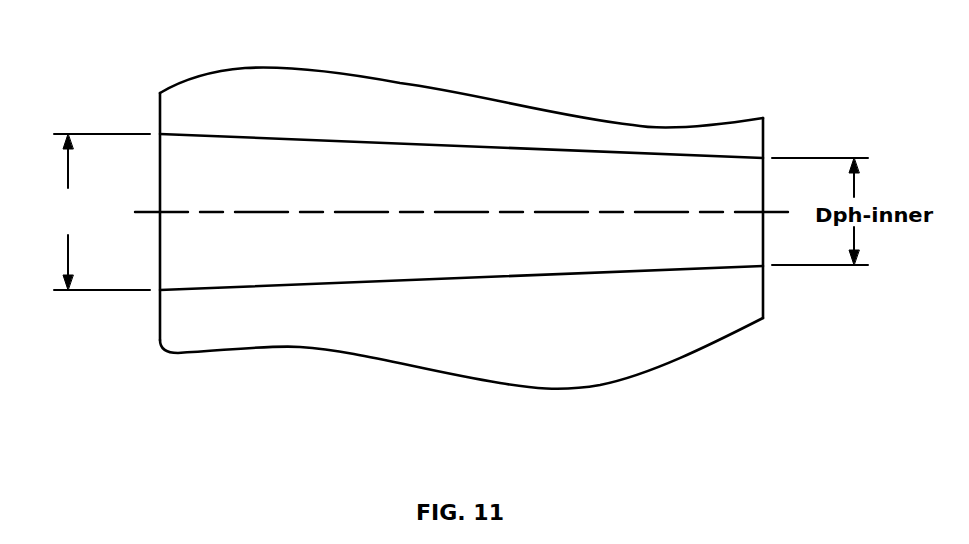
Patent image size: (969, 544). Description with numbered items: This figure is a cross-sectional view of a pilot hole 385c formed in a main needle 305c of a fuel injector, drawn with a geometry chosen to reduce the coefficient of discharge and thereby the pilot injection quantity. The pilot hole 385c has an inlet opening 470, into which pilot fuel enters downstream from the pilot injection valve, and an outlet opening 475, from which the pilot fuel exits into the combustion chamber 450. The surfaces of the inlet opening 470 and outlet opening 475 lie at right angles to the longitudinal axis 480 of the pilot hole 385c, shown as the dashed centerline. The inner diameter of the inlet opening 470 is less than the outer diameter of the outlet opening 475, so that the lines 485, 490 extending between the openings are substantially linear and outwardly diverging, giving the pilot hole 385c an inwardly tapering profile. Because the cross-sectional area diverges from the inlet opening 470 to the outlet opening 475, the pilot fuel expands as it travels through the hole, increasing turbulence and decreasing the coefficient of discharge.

The main needle 305c is at (316, 108).
The outlet opening 475 is at (157, 173).
The inlet opening 470 is at (763, 200).
The line 490 is at (352, 143).
The line 485 is at (449, 278).
The longitudinal axis 480 is at (238, 213).
The pilot hole 385c is at (327, 251).
The combustion chamber 450 is at (100, 257).